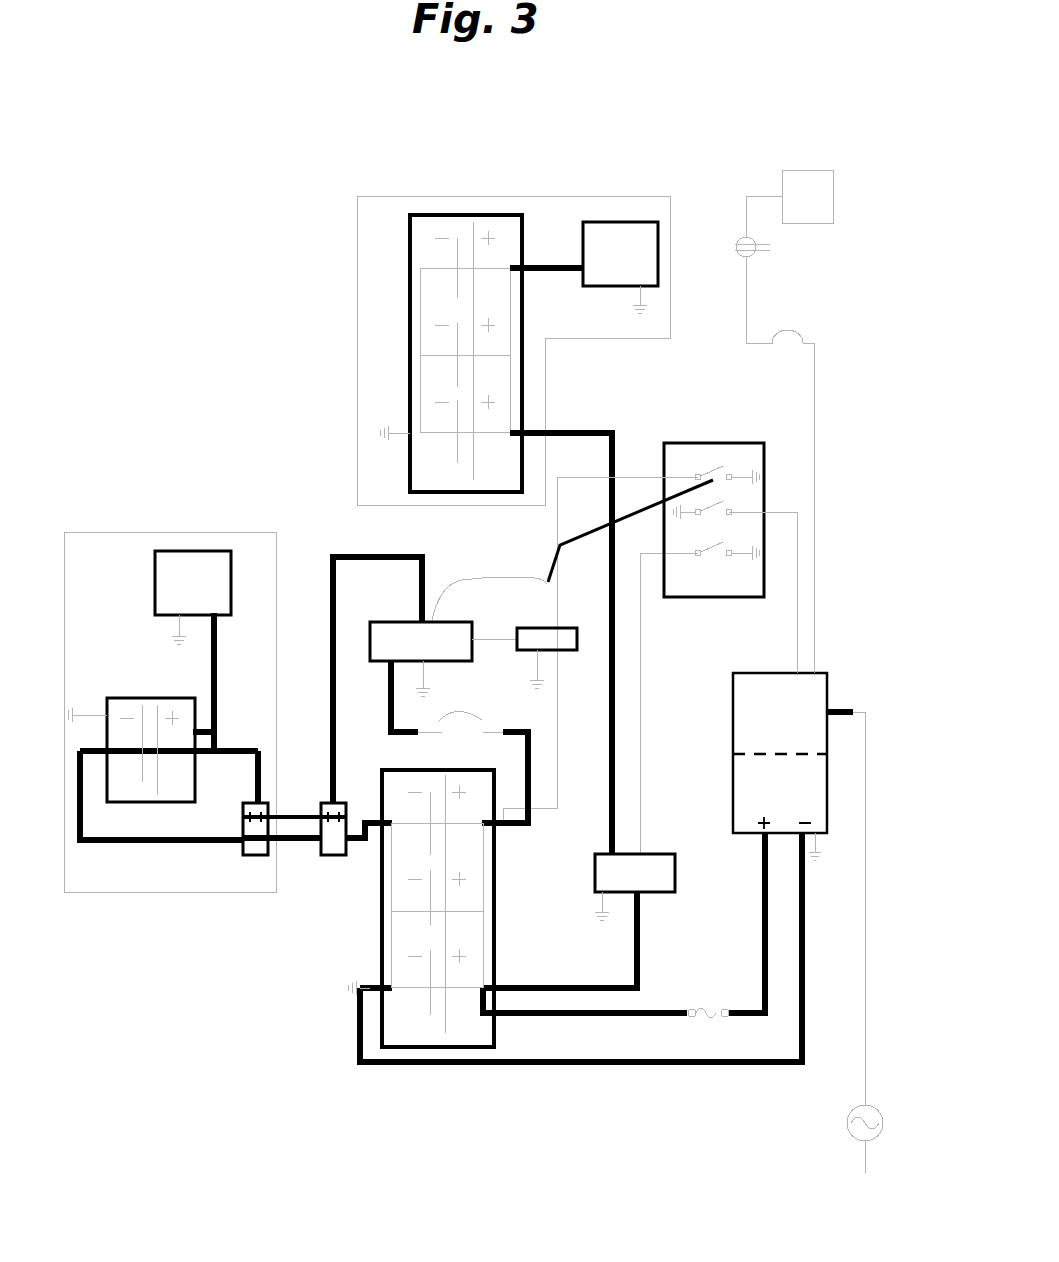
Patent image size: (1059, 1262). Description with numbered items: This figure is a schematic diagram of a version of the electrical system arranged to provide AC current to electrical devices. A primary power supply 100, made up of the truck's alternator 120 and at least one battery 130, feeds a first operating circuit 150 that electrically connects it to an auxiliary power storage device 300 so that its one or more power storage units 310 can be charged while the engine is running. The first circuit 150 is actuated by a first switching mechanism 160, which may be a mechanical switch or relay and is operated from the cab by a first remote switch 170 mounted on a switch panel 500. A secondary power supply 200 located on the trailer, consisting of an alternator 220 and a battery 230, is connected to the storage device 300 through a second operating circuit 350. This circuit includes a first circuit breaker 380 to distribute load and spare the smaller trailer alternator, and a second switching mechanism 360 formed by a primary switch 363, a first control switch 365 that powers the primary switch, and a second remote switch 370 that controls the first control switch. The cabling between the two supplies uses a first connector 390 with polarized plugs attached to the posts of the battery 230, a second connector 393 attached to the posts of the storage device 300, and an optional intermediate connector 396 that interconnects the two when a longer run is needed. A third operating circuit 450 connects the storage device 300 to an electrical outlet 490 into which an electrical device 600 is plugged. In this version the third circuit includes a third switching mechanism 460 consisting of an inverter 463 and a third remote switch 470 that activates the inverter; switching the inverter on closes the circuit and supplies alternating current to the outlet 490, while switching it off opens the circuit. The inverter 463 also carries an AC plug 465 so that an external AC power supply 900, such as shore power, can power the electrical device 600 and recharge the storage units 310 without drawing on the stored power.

The primary power supply 100 is at (357, 282).
The alternator 120 is at (597, 222).
The battery 130 is at (408, 253).
The first operating circuit 150 is at (652, 813).
The first switching mechanism 160 is at (648, 892).
The first remote switch 170 is at (712, 560).
The secondary power supply 200 is at (144, 532).
The alternator 220 is at (163, 570).
The battery 230 is at (132, 710).
The auxiliary power storage device 300 is at (382, 920).
The power storage units 310 is at (472, 837).
The second operating circuit 350 is at (352, 548).
The second switching mechanism 360 is at (489, 583).
The primary switch 363 is at (432, 622).
The first control switch 365 is at (537, 628).
The second remote switch 370 is at (621, 541).
The first circuit breaker 380 is at (468, 733).
The first connector 390 is at (228, 753).
The second connector 393 is at (342, 858).
The intermediate connector 396 is at (360, 858).
The third operating circuit 450 is at (667, 1078).
The third switching mechanism 460 is at (747, 632).
The inverter 463 is at (790, 673).
The AC plug 465 is at (831, 700).
The third remote switch 470 is at (763, 592).
The electrical outlet 490 is at (757, 258).
The switch panel 500 is at (752, 443).
The electrical device 600 is at (782, 190).
The external AC power supply 900 is at (845, 1135).